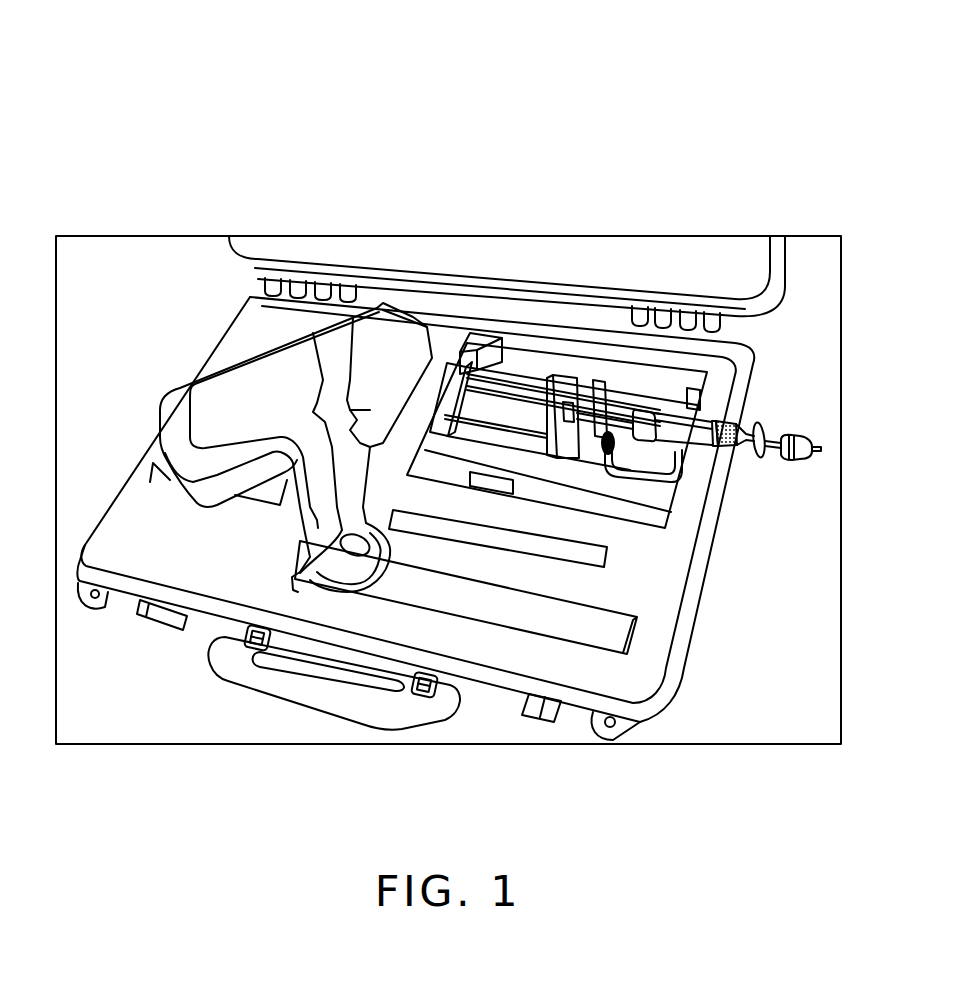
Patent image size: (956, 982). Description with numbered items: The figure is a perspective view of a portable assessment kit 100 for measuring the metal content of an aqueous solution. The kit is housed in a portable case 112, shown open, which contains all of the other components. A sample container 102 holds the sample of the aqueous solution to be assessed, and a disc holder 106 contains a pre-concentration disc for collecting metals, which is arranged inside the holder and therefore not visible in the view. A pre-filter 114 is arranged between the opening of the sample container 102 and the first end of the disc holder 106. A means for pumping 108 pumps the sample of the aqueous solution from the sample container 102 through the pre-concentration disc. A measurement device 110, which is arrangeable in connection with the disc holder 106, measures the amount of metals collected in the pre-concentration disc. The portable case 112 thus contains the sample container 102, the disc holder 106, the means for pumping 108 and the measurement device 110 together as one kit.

The portable assessment kit 100 is at (754, 73).
The sample container 102 is at (672, 413).
The disc holder 106 is at (794, 458).
The means for pumping 108 is at (465, 362).
The measurement device 110 is at (270, 332).
The portable case 112 is at (498, 683).
The pre-filter 114 is at (756, 459).